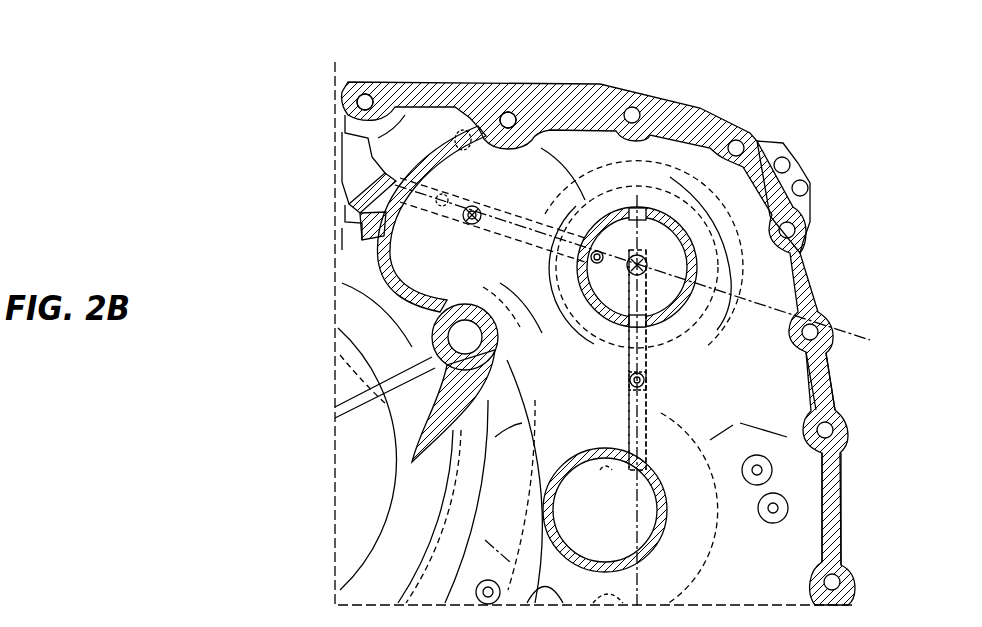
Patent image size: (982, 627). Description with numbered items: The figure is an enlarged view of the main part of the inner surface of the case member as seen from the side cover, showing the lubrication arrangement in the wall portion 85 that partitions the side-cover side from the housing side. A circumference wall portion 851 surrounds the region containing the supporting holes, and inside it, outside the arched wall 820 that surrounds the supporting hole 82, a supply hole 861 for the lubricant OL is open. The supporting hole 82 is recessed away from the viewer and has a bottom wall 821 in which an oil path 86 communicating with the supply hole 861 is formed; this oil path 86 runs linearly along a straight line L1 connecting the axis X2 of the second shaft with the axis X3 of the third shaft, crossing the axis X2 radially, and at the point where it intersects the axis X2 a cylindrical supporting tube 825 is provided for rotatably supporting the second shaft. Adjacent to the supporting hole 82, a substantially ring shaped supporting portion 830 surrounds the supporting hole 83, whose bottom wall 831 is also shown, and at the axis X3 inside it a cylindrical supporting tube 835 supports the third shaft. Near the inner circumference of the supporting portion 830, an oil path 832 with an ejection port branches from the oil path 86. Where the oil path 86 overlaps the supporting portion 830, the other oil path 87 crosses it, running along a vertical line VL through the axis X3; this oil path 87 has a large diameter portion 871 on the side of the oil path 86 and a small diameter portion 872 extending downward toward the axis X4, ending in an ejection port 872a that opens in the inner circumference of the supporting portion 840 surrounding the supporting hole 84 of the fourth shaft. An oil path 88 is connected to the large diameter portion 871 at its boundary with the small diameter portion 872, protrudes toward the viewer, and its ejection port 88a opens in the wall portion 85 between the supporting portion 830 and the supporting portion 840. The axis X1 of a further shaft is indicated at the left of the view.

The supporting hole 82 is at (458, 118).
The arched wall 820 is at (368, 93).
The bottom wall 821 is at (525, 128).
The supporting hole 83 is at (682, 136).
The supporting portion 830 is at (642, 243).
The bottom wall 831 is at (586, 336).
The oil path 832 is at (624, 265).
The supporting tube 835 is at (683, 274).
The supporting hole 84 is at (550, 528).
The supporting portion 840 is at (672, 538).
The wall portion 85 is at (788, 480).
The circumference wall portion 851 is at (834, 527).
The oil path 86 is at (443, 196).
The supply hole 861 is at (350, 215).
The oil path 87 is at (727, 346).
The large diameter portion 871 is at (655, 333).
The small diameter portion 872 is at (650, 387).
The ejection port 872a is at (608, 521).
The oil path 88 is at (629, 388).
The ejection port 88a is at (630, 380).
The supporting tube 825 is at (481, 208).
The axis X1 is at (438, 443).
The axis X2 is at (459, 229).
The axis X3 is at (637, 267).
The axis X4 is at (605, 510).
The straight line L1 is at (647, 268).
The vertical line VL is at (639, 400).
The lubricant OL is at (358, 204).